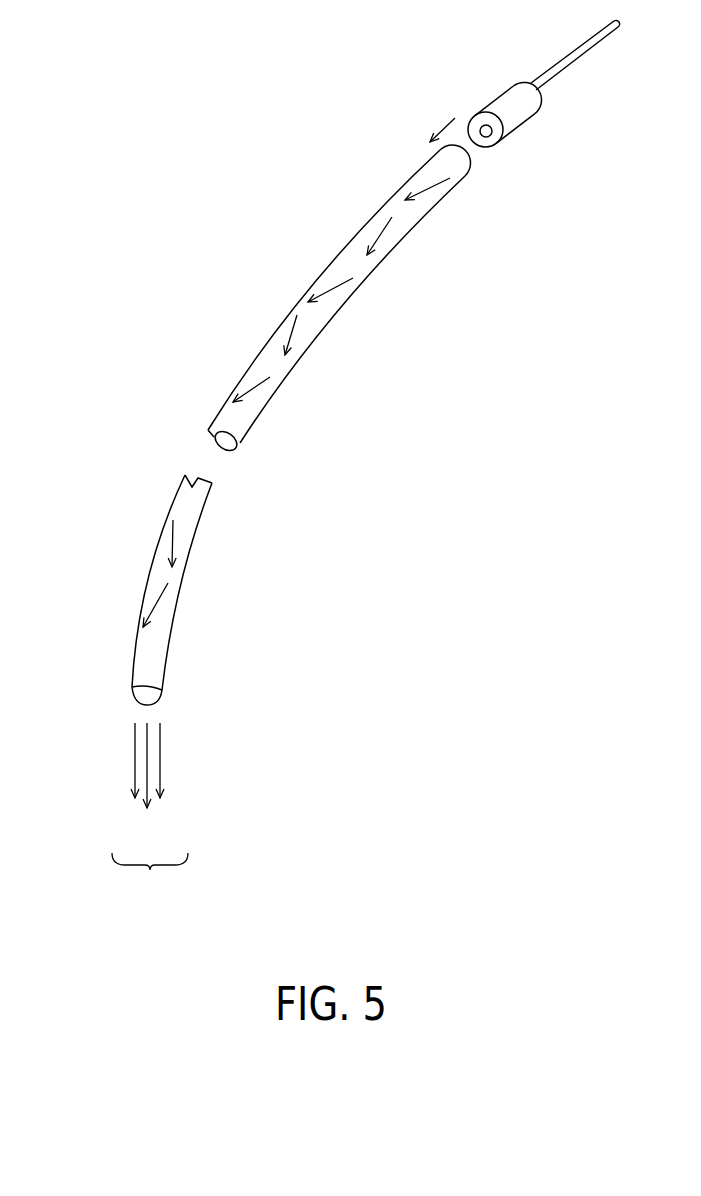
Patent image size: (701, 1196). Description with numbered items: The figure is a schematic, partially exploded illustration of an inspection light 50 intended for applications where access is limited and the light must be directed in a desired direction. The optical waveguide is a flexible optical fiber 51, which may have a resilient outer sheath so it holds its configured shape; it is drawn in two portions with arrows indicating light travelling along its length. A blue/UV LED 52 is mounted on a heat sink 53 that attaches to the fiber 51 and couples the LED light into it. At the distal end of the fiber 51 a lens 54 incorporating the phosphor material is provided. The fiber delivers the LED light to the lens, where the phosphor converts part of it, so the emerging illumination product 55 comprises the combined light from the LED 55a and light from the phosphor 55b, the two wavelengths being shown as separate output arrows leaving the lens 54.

The inspection light 50 is at (507, 513).
The flexible optical fiber 51 is at (305, 343).
The blue/UV LED 52 is at (487, 137).
The light source 53 is at (510, 117).
The lens 54 is at (163, 695).
The illumination product 55 is at (149, 812).
The light from the LED 55a is at (162, 770).
The light from the phosphor 55b is at (130, 757).